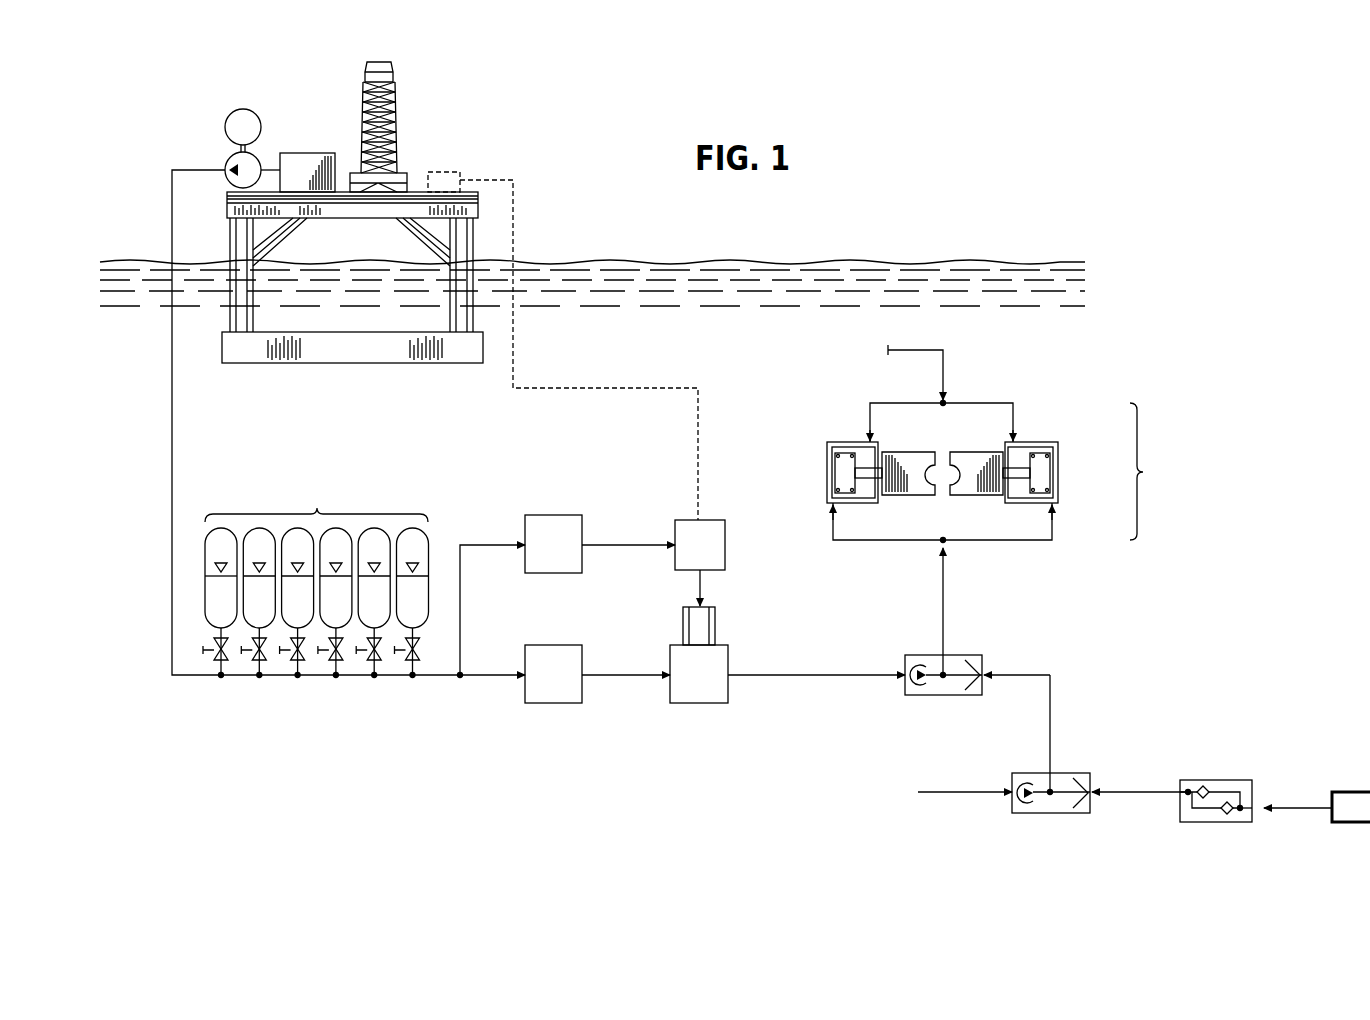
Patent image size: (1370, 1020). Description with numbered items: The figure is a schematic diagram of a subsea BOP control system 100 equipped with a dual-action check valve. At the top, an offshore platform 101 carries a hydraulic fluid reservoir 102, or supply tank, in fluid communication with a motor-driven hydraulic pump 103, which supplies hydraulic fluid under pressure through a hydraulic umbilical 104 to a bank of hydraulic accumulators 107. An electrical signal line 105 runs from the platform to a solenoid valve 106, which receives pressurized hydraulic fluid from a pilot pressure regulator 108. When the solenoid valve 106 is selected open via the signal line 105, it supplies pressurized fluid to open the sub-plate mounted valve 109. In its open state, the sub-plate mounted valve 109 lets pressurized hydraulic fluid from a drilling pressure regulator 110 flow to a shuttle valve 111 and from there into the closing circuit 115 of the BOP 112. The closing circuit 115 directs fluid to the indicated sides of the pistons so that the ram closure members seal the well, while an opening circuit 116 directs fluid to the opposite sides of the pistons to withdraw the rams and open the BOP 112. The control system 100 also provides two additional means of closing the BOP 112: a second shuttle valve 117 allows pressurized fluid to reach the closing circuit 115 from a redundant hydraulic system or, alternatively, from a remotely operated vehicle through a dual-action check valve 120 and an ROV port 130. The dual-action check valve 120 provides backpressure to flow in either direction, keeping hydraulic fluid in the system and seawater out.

The subsea BOP control system 100 is at (1166, 375).
The offshore platform 101 is at (323, 212).
The hydraulic fluid reservoir 102 is at (310, 153).
The motor-driven hydraulic pump 103 is at (227, 128).
The hydraulic umbilical 104 is at (172, 422).
The electrical signal line 105 is at (516, 342).
The solenoid valve 106 is at (727, 538).
The hydraulic accumulators 107 is at (317, 508).
The pilot pressure regulator 108 is at (551, 515).
The sub-plate mounted valve 109 is at (728, 690).
The drilling pressure regulator 110 is at (552, 703).
The shuttle valve 111 is at (960, 655).
The BOP 112 is at (1145, 473).
The closing circuit 115 is at (940, 600).
The opening circuit 116 is at (913, 352).
The shuttle valve 117 is at (1070, 773).
The dual-action check valve 120 is at (1223, 780).
The ROV port 130 is at (1353, 823).